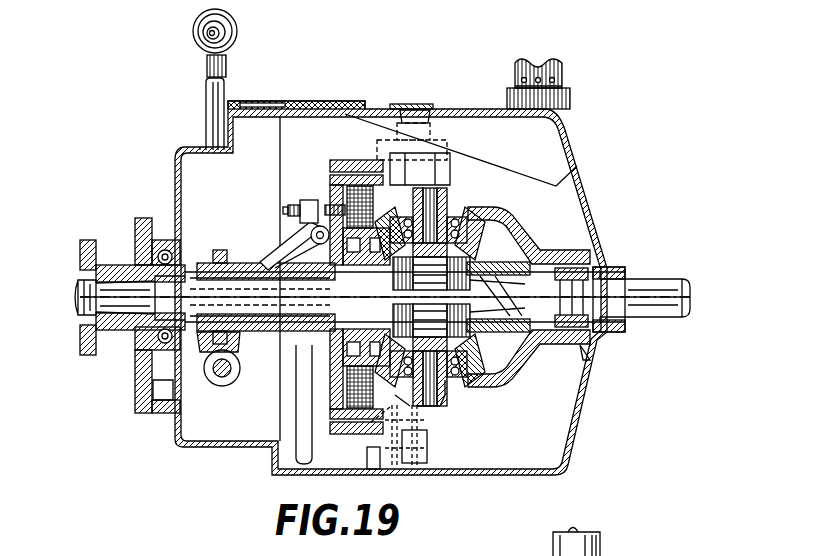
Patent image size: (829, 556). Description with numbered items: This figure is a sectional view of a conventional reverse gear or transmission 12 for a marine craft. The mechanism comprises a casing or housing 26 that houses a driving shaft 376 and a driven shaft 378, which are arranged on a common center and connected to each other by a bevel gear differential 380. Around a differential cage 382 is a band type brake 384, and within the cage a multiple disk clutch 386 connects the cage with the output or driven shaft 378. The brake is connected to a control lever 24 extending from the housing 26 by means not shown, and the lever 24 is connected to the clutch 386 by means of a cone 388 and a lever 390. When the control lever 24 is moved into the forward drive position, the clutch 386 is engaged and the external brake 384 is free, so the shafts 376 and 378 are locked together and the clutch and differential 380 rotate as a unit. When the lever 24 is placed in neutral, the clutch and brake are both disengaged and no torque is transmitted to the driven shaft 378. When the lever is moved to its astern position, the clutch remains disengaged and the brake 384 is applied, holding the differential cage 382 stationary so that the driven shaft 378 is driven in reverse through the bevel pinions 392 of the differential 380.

The reverse gear or transmission 12 is at (347, 97).
The shift lever 24 is at (213, 118).
The housing 26 is at (176, 190).
The driving shaft 376 is at (643, 285).
The driven shaft 378 is at (122, 302).
The bevel gear differential 380 is at (470, 222).
The differential cage 382 is at (480, 240).
The band type brake 384 is at (341, 160).
The multiple disk clutch 386 is at (330, 200).
The cone 388 is at (255, 352).
The lever 390 is at (277, 240).
The bevel pinions 392 is at (467, 370).